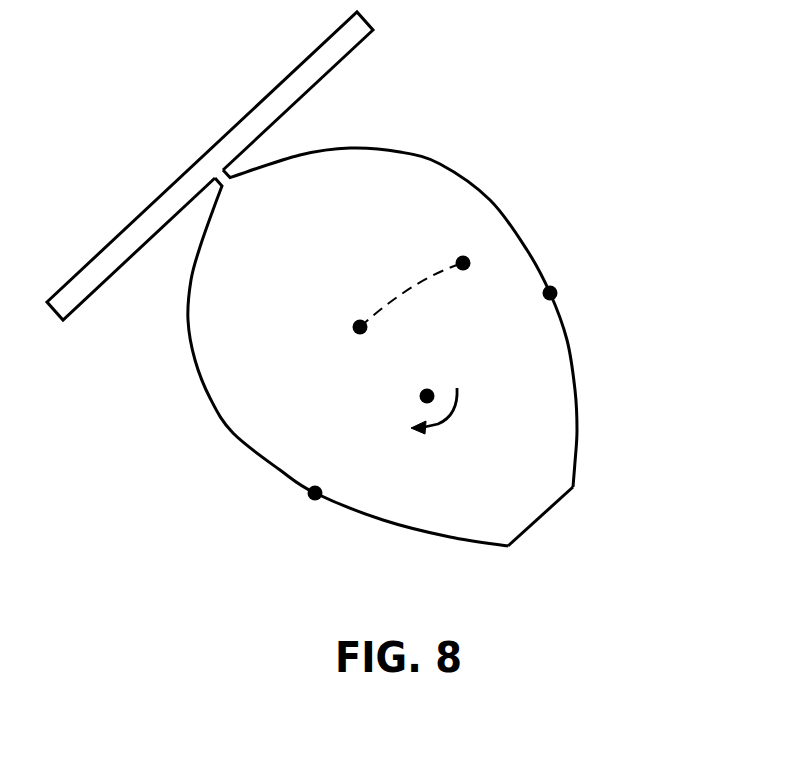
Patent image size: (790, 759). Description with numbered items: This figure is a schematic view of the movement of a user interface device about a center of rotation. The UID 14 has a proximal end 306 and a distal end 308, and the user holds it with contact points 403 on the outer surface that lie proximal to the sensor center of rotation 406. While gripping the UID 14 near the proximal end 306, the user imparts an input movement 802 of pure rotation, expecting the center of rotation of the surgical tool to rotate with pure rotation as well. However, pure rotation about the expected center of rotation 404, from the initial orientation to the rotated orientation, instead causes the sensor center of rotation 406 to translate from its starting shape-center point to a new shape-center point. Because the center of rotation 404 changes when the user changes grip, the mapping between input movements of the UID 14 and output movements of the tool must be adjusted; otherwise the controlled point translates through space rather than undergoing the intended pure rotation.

The UID 14 is at (440, 164).
The distal end 308 is at (202, 157).
The proximal end 306 is at (543, 515).
The contact points 403 is at (552, 293).
The center of rotation 404 is at (427, 396).
The sensor center of rotation 406 is at (360, 327).
The input movement 802 is at (455, 412).